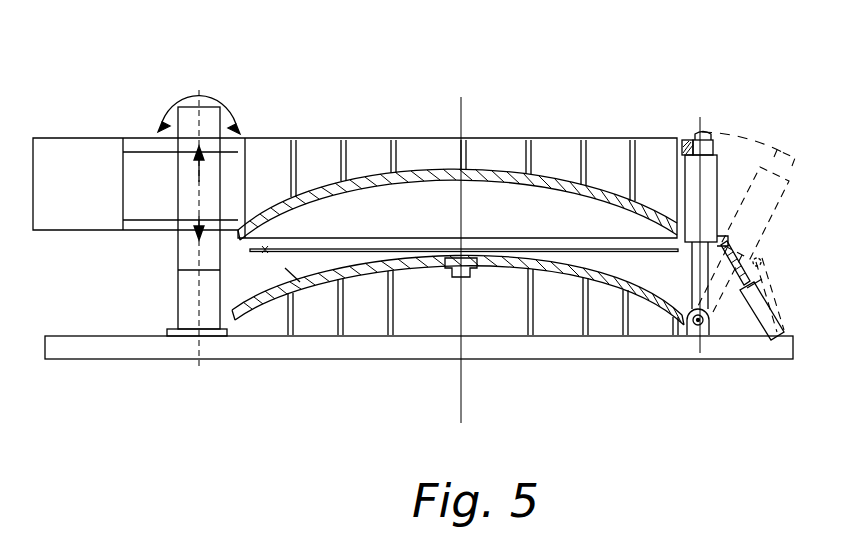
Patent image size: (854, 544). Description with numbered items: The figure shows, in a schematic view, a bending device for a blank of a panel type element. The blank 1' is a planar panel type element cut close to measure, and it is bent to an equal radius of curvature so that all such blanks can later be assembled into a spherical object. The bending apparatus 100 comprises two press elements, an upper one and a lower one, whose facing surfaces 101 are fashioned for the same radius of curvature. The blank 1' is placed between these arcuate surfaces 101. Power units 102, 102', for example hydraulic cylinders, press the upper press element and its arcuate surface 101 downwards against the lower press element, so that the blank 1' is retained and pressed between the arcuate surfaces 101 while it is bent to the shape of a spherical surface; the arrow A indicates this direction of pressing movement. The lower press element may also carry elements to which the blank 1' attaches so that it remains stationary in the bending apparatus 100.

The bending apparatus 100 is at (576, 113).
The arcuate surfaces 101 is at (401, 190).
The blank 1' is at (464, 159).
The power unit 102 is at (245, 201).
The power unit 102' is at (738, 200).
The direction of movement A is at (197, 187).